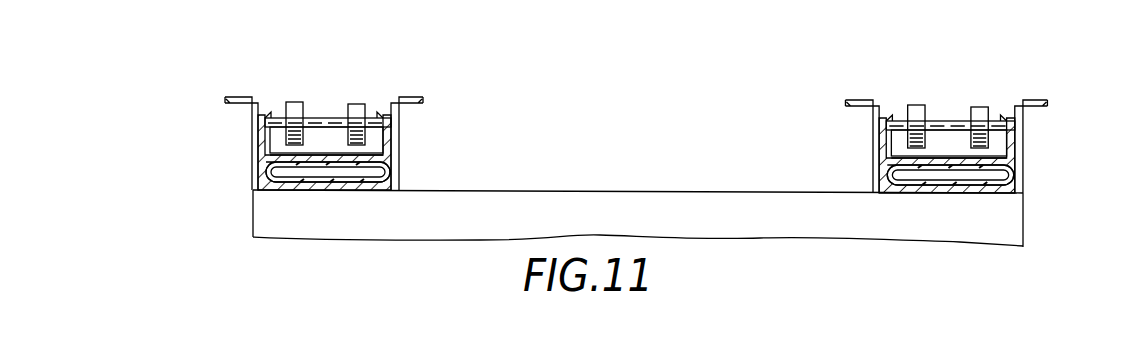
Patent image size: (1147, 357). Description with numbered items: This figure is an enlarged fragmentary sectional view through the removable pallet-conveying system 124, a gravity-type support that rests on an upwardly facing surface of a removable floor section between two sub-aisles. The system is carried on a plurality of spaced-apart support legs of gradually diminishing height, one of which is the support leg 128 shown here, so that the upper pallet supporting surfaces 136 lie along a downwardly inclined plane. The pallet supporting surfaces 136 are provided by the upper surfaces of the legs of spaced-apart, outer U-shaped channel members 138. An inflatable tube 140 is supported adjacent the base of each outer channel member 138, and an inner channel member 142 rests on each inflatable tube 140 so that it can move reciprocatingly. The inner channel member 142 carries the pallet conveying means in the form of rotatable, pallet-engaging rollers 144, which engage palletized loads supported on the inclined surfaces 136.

The removable pallet-conveying system 124 is at (660, 115).
The support leg 128 is at (258, 211).
The upper pallet supporting surface 136 is at (243, 97).
The outer U-shaped channel member 138 is at (400, 157).
The inflatable tube 140 is at (262, 173).
The inner channel member 142 is at (390, 143).
The pallet-engaging roller 144 is at (348, 104).